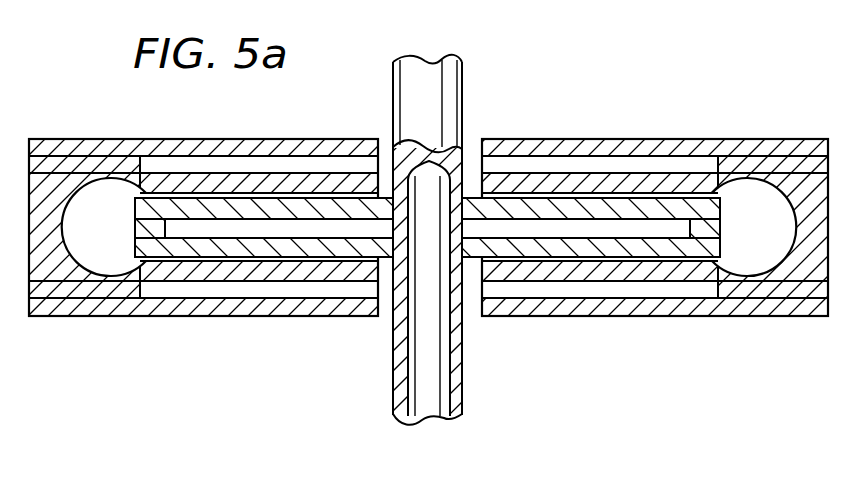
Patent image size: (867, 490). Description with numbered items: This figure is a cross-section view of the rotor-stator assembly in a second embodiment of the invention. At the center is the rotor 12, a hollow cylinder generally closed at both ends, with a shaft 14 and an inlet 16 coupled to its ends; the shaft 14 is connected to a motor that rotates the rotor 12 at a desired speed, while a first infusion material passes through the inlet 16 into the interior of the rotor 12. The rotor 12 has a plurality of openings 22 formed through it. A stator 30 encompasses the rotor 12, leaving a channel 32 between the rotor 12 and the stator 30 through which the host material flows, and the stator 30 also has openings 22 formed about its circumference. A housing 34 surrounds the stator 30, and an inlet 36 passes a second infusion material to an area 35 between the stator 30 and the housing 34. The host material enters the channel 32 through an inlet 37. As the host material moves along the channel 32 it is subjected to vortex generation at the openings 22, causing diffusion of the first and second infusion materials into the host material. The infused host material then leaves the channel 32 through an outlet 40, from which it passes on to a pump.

The rotor 12 is at (283, 198).
The shaft 14 is at (418, 60).
The inlet 16 is at (393, 400).
The openings 22 is at (598, 250).
The stator 30 is at (326, 172).
The channel 32 is at (164, 195).
The housing 34 is at (73, 141).
The area 35 is at (228, 165).
The inlet 36 is at (383, 324).
The inlet 37 is at (384, 133).
The outlet 40 is at (115, 237).